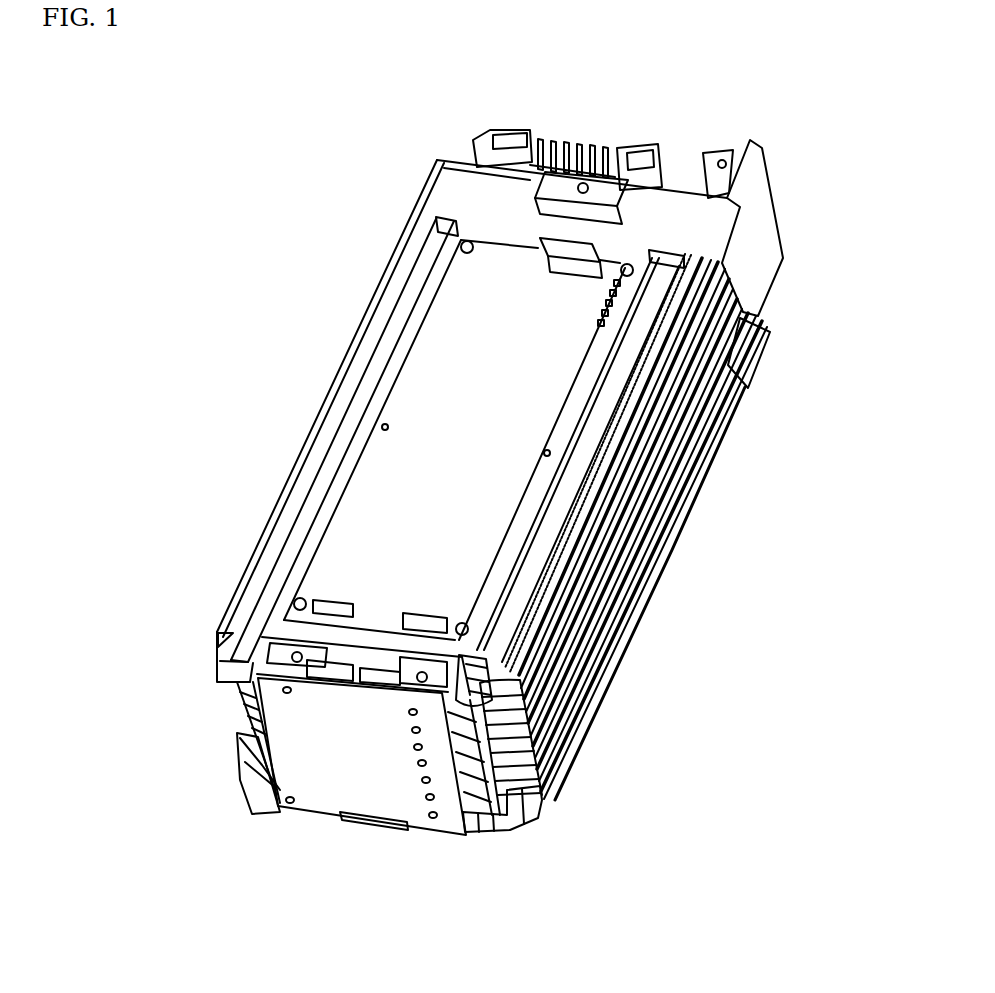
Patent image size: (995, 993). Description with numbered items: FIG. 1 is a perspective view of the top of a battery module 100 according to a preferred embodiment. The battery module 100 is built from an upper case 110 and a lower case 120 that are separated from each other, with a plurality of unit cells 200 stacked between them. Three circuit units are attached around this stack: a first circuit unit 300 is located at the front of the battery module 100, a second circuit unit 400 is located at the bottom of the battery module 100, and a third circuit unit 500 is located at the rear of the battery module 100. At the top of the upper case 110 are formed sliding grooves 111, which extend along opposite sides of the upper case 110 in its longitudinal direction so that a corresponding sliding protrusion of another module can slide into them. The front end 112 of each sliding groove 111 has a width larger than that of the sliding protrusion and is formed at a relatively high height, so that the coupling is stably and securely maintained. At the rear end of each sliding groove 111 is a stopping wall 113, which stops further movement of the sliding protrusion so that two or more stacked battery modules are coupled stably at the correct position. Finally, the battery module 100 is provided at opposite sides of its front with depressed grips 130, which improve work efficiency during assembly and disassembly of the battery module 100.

The battery module 100 is at (115, 111).
The upper case 110 is at (680, 372).
The sliding groove 111 is at (315, 472).
The front end of sliding groove 112 is at (252, 584).
The stopping wall 113 is at (427, 218).
The lower case 120 is at (640, 618).
The depressed grip 130 is at (520, 823).
The unit cells 200 is at (637, 524).
The first circuit unit 300 is at (205, 707).
The second circuit unit 400 is at (428, 340).
The third circuit unit 500 is at (455, 140).